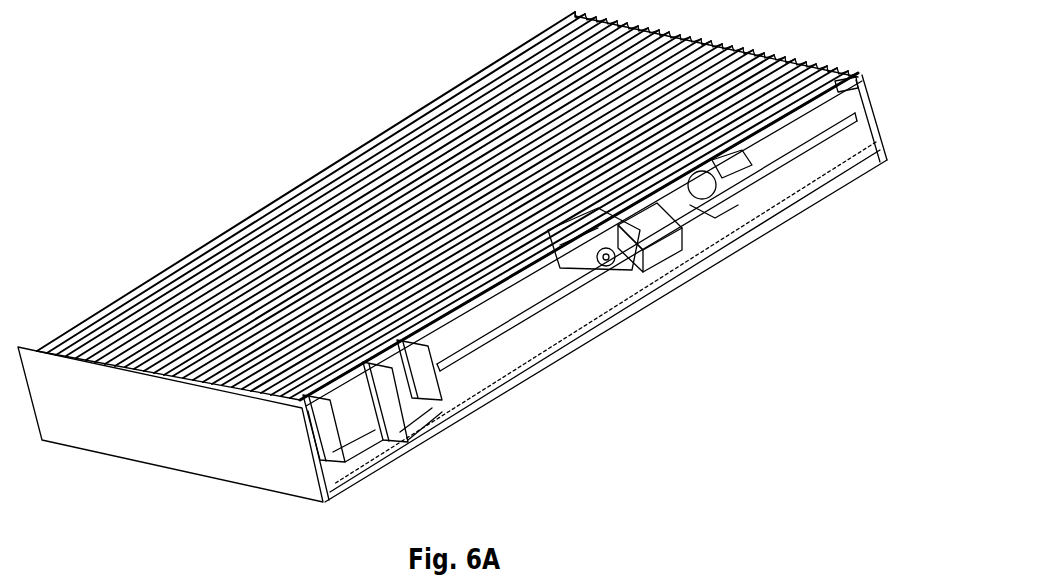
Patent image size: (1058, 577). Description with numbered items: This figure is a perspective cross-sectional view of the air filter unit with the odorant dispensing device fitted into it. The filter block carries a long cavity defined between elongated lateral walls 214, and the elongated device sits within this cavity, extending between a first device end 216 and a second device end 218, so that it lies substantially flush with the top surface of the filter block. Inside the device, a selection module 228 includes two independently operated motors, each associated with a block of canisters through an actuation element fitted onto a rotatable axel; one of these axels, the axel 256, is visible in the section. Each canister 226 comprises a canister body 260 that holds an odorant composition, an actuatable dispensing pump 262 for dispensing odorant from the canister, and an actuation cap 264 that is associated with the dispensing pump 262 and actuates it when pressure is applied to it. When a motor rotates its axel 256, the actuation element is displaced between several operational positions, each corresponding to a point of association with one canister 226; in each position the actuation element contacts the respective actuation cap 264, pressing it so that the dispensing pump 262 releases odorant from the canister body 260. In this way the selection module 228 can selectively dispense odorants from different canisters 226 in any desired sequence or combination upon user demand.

The elongated lateral walls 214 is at (603, 243).
The first device end 216 is at (440, 398).
The second device end 218 is at (887, 160).
The canister 226 is at (838, 110).
The selection module 228 is at (667, 248).
The axel 256 is at (638, 250).
The canister body 260 is at (798, 112).
The actuatable dispensing pump 262 is at (762, 176).
The actuation cap 264 is at (718, 229).